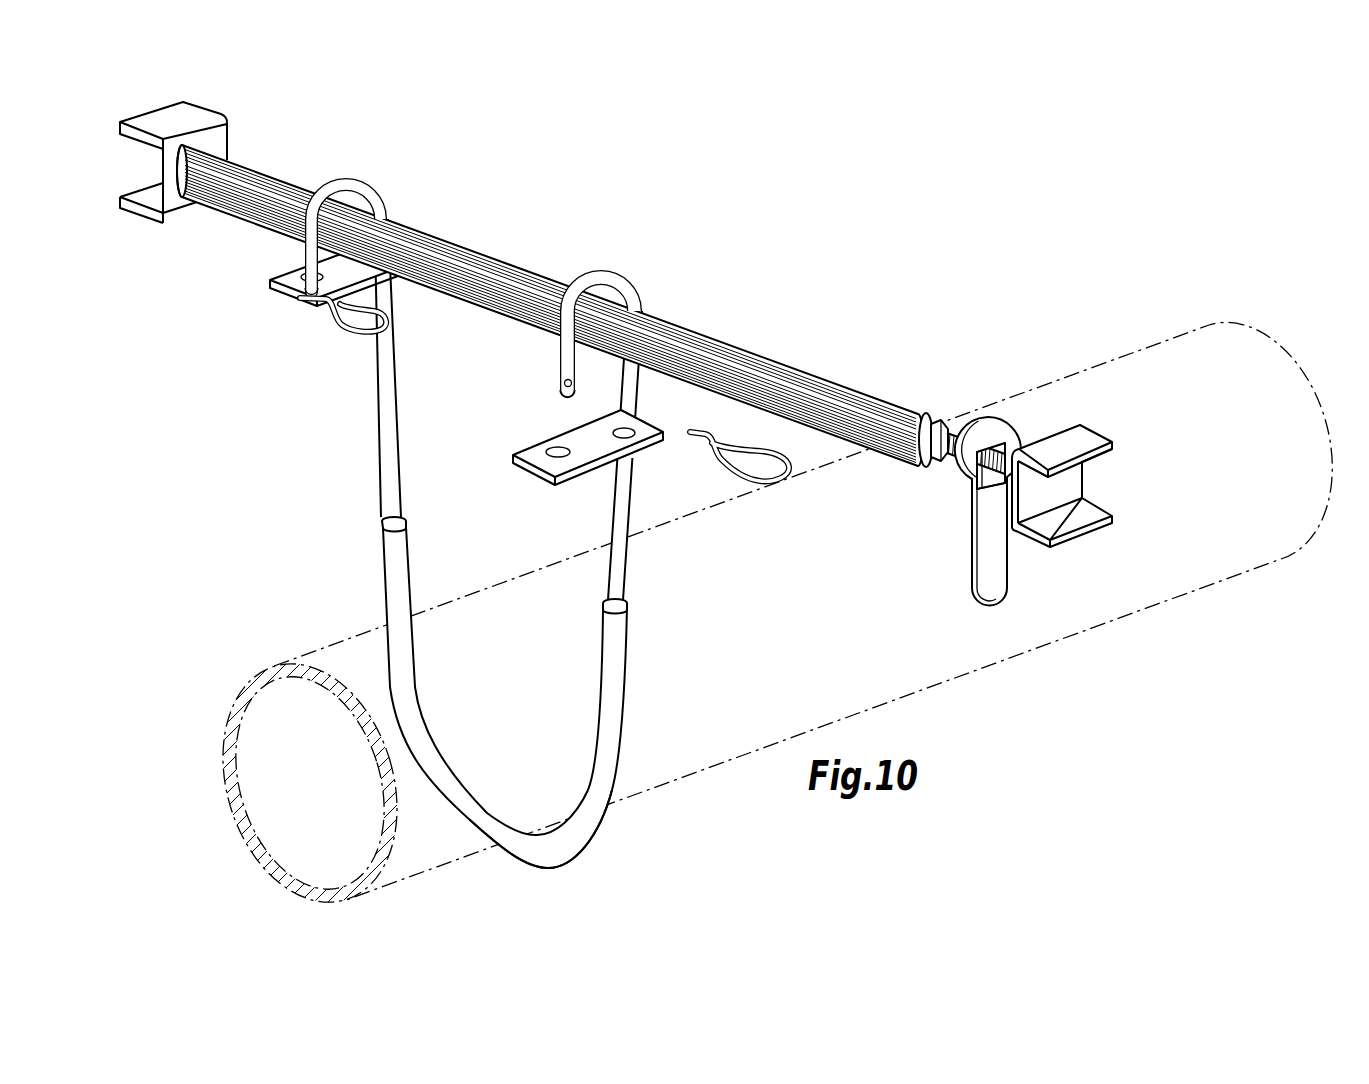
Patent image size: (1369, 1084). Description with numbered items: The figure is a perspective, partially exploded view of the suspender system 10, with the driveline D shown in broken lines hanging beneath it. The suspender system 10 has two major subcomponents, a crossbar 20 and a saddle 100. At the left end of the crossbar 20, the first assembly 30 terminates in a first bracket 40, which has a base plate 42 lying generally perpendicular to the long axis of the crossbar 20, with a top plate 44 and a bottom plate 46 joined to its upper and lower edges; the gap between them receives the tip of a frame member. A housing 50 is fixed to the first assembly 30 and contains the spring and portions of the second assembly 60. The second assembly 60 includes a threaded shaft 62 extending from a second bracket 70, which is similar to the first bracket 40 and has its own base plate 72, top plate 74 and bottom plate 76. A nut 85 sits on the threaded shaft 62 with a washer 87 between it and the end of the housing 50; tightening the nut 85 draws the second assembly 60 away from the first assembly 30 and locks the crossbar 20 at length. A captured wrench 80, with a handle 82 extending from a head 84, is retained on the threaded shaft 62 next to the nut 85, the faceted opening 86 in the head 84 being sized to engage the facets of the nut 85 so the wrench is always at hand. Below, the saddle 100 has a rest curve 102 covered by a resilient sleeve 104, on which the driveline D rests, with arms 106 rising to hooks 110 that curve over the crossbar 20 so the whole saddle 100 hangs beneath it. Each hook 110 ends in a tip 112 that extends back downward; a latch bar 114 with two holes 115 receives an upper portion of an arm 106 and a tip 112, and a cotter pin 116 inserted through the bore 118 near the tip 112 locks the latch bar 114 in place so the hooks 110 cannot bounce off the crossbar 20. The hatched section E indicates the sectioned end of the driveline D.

The suspender system 10 is at (618, 482).
The crossbar 20 is at (550, 293).
The first assembly 30 is at (216, 143).
The first bracket 40 is at (194, 180).
The base plate 42 is at (173, 207).
The top plate 44 is at (158, 116).
The bottom plate 46 is at (146, 195).
The housing 50 is at (487, 261).
The second assembly 60 is at (934, 421).
The threaded shaft 62 is at (945, 458).
The second bracket 70 is at (1086, 442).
The base plate 72 is at (1073, 485).
The top plate 74 is at (1093, 434).
The bottom plate 76 is at (1094, 518).
The captured wrench 80 is at (981, 509).
The handle 82 is at (1001, 588).
The head 84 is at (998, 426).
The nut 85 is at (929, 456).
The faceted opening 86 is at (980, 486).
The washer 87 is at (926, 410).
The saddle 100 is at (530, 549).
The rest curve 102 is at (578, 849).
The resilient sleeve 104 is at (612, 756).
The arms 106 is at (382, 500).
The hooks 110 is at (438, 263).
The tips 112 is at (316, 311).
The latch bar 114 is at (445, 379).
The latch bar holes 115 is at (575, 453).
The cotter pin 116 is at (350, 334).
The bore 118 is at (558, 367).
The driveline D is at (961, 680).
The pipe wall cross-section E is at (230, 790).